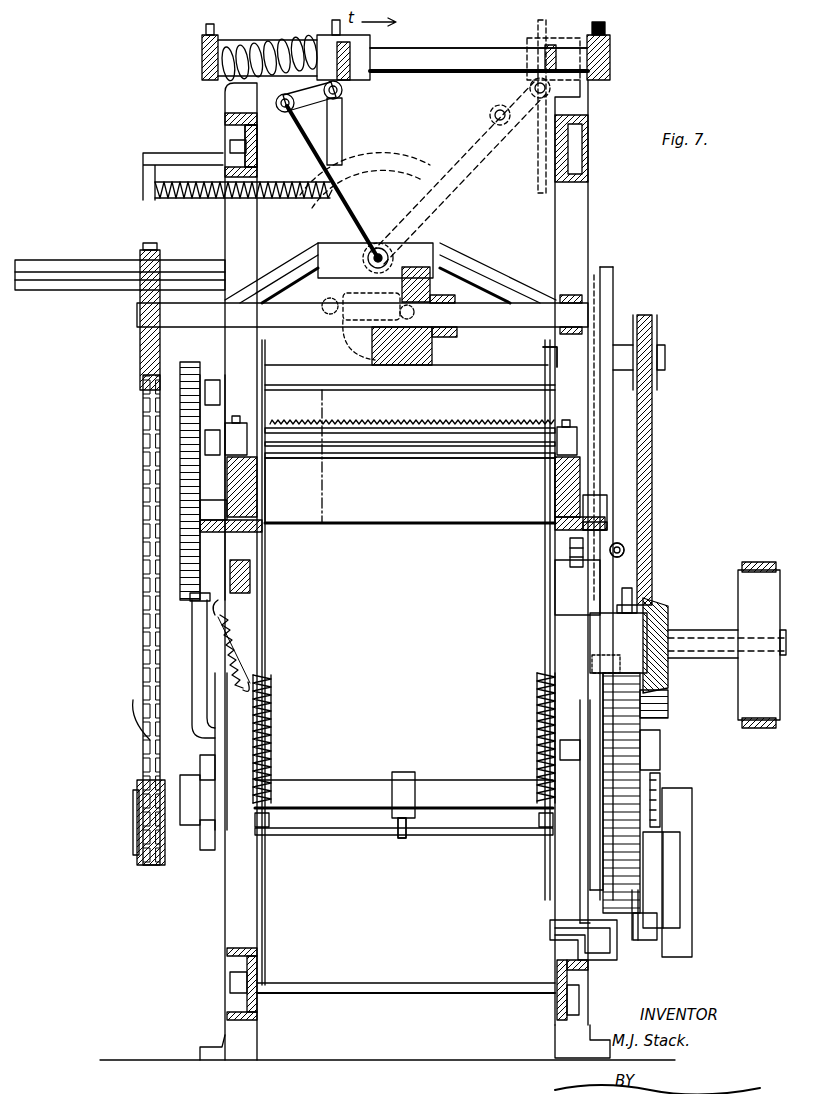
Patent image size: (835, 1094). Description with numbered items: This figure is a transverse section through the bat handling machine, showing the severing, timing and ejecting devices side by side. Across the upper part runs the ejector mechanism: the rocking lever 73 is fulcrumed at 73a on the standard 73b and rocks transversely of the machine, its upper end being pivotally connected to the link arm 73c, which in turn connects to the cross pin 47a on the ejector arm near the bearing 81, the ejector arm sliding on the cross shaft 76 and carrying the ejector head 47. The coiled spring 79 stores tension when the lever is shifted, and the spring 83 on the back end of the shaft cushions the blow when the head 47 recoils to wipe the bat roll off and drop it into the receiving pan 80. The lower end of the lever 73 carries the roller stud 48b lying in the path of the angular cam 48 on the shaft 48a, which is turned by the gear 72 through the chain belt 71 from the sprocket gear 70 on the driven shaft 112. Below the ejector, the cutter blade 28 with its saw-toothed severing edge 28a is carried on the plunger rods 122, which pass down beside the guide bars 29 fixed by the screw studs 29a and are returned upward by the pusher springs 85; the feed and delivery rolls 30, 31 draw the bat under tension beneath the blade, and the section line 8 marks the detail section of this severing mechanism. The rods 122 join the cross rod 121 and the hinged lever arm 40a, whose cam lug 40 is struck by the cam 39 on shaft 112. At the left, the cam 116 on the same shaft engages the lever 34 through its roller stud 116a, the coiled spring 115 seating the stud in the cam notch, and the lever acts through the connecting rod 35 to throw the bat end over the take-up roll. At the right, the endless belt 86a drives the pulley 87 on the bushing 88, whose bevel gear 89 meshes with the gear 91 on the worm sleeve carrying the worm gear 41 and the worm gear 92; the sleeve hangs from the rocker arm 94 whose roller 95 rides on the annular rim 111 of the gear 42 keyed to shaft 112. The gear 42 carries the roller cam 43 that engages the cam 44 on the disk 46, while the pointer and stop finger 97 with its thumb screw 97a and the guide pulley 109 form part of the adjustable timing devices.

The spring 83 is at (280, 42).
The bearing 81 is at (370, 47).
The cross shaft 76 is at (466, 52).
The cross pin 47a is at (343, 93).
The ejector head 47 is at (342, 133).
The link arm 73c is at (257, 135).
The rocking lever 73 is at (371, 230).
The standard 73b is at (415, 245).
The fulcrum 73a is at (360, 250).
The coiled spring 79 is at (300, 205).
The receiving pan 80 is at (40, 264).
The gear 72 is at (140, 368).
The shaft 48a is at (137, 318).
The roller stud 48b is at (398, 316).
The cam 48 is at (432, 348).
The feed and delivery roll 30 is at (535, 358).
The section line 8 is at (321, 442).
The severing edge 28a is at (379, 414).
The cutter blade 28 is at (410, 413).
The guide bar 29 is at (458, 448).
The screw stud 29a is at (243, 424).
The feed and delivery roll 31 is at (410, 490).
The chain belt 71 is at (160, 505).
The sprocket gear 70 is at (131, 830).
The coiled spring 115 is at (212, 648).
The connecting rod 35 is at (200, 672).
The lever 34 is at (227, 752).
The cam 116 is at (200, 762).
The roller stud 116a is at (200, 832).
The plunger rod 122 is at (265, 652).
The pusher spring 85 is at (268, 702).
The driven shaft 112 is at (404, 794).
The cross rod 121 is at (478, 830).
The cam 39 is at (410, 778).
The cam lug 40 is at (388, 826).
The hinged lever arm 40a is at (402, 838).
The guide pulley 109 is at (652, 330).
The pointer and stop finger 97 is at (618, 543).
The thumb screw 97a is at (625, 550).
The rocker arm 94 is at (618, 630).
The roller 95 is at (600, 672).
The bevel gear 89 is at (665, 625).
The bushing 88 is at (728, 630).
The pulley 87 is at (738, 578).
The endless belt 86a is at (758, 562).
The gear 91 is at (668, 686).
The worm gear 92 is at (668, 708).
The roller cam 43 is at (660, 756).
The worm gear 41 is at (664, 786).
The disk 46 is at (692, 810).
The cam 44 is at (655, 898).
The gear 42 is at (598, 885).
The annular rim 111 is at (592, 830).